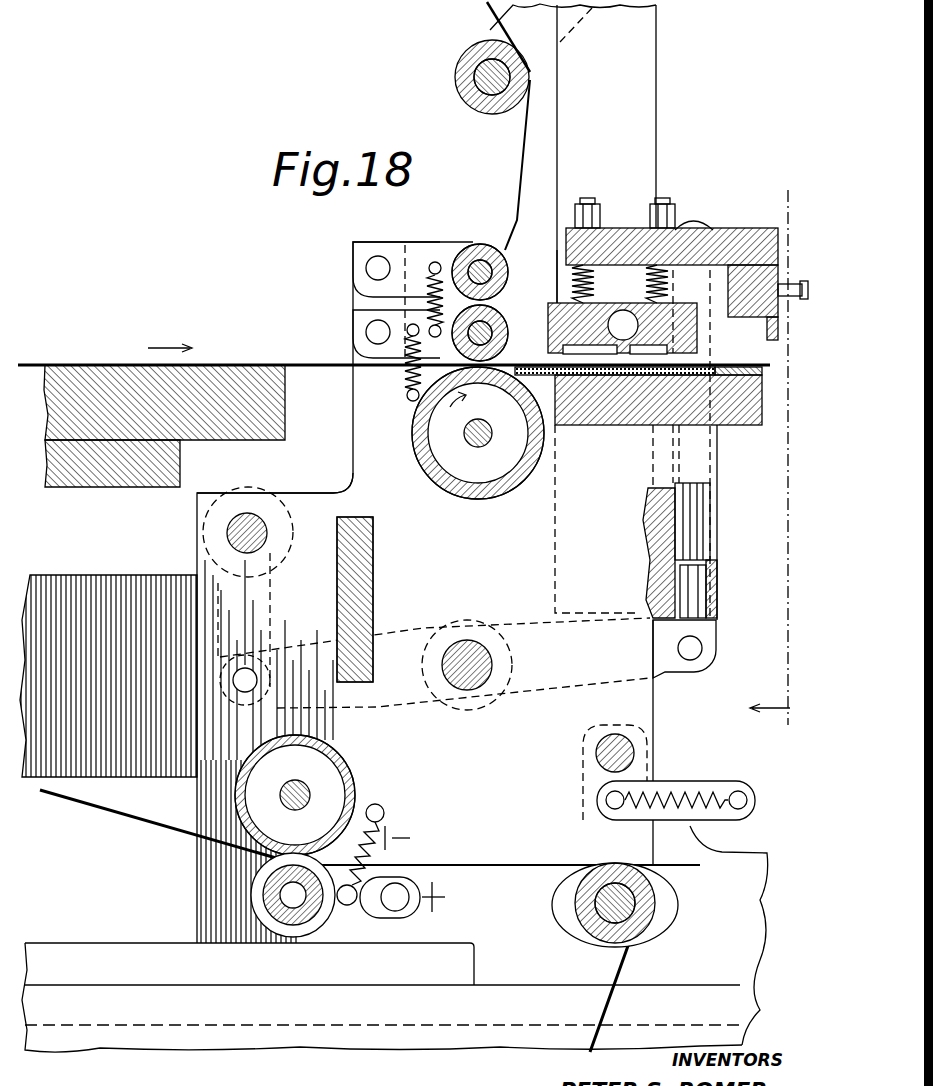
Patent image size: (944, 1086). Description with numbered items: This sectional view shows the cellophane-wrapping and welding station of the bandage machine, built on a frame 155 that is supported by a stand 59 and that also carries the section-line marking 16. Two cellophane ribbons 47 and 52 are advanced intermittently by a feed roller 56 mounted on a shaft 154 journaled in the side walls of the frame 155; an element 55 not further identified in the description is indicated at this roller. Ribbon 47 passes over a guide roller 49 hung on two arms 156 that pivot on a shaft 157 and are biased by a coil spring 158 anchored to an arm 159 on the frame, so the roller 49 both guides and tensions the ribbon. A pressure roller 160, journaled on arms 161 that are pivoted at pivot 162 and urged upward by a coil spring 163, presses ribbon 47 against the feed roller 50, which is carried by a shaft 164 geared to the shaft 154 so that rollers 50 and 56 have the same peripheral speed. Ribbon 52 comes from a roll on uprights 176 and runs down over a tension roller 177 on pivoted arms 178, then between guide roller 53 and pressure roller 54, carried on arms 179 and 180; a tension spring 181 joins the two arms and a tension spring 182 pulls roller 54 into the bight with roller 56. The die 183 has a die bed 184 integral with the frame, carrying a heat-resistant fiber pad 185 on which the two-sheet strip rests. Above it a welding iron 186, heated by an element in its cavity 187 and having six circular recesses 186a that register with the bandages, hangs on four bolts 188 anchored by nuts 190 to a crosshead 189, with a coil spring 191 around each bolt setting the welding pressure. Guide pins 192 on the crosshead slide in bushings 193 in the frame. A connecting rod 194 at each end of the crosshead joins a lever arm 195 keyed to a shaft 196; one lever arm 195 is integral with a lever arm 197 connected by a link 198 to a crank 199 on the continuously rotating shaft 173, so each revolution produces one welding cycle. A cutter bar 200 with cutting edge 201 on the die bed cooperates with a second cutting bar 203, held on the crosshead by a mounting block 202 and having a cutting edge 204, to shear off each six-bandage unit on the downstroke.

The section line 16 is at (769, 454).
The cellophane ribbon 47 is at (290, 362).
The guide roller 49 is at (596, 936).
The feed roller 50 is at (355, 777).
The cellophane ribbon 52 is at (517, 198).
The guide roller 53 is at (478, 246).
The pressure roller 54 is at (496, 320).
The direction of rotation 55 is at (470, 382).
The feed roller 56 is at (470, 498).
The stand 59 is at (88, 1052).
The shaft 154 is at (465, 440).
The frame 155 is at (377, 599).
The arms 156 is at (597, 802).
The shaft 157 is at (625, 740).
The coil spring 158 is at (695, 783).
The arm 159 is at (706, 820).
The pressure roller 160 is at (300, 928).
The arms 161 is at (355, 918).
The pivot 162 is at (420, 897).
The coil spring 163 is at (395, 844).
The shaft 164 is at (310, 799).
The shaft 173 is at (265, 528).
The uprights 176 is at (657, 98).
The tension roller 177 is at (456, 88).
The arms 178 is at (492, 36).
The arm 179 is at (418, 242).
The arm 180 is at (380, 308).
The tension spring 181 is at (427, 280).
The tension spring 182 is at (405, 375).
The heater assembly 183 is at (702, 203).
The die bed 184 is at (738, 425).
The heater element 185 is at (638, 356).
The welding iron 186 is at (550, 303).
The circular recesses 186a is at (606, 357).
The cavity 187 is at (622, 318).
The bolts 188 is at (660, 198).
The crosshead 189 is at (724, 228).
The nuts 190 is at (650, 213).
The coil spring 191 is at (646, 280).
The guide pins 192 is at (700, 522).
The bushings 193 is at (706, 600).
The connecting rod 194 is at (716, 625).
The lever arms 195 is at (562, 695).
The shaft 196 is at (478, 682).
The lever arm 197 is at (425, 628).
The link 198 is at (265, 577).
The crank 199 is at (250, 490).
The cutter bar 200 is at (762, 392).
The cutting edge 201 is at (762, 372).
The mounting block 202 is at (752, 320).
The second cutting bar 203 is at (768, 316).
The cutting edge 204 is at (770, 342).